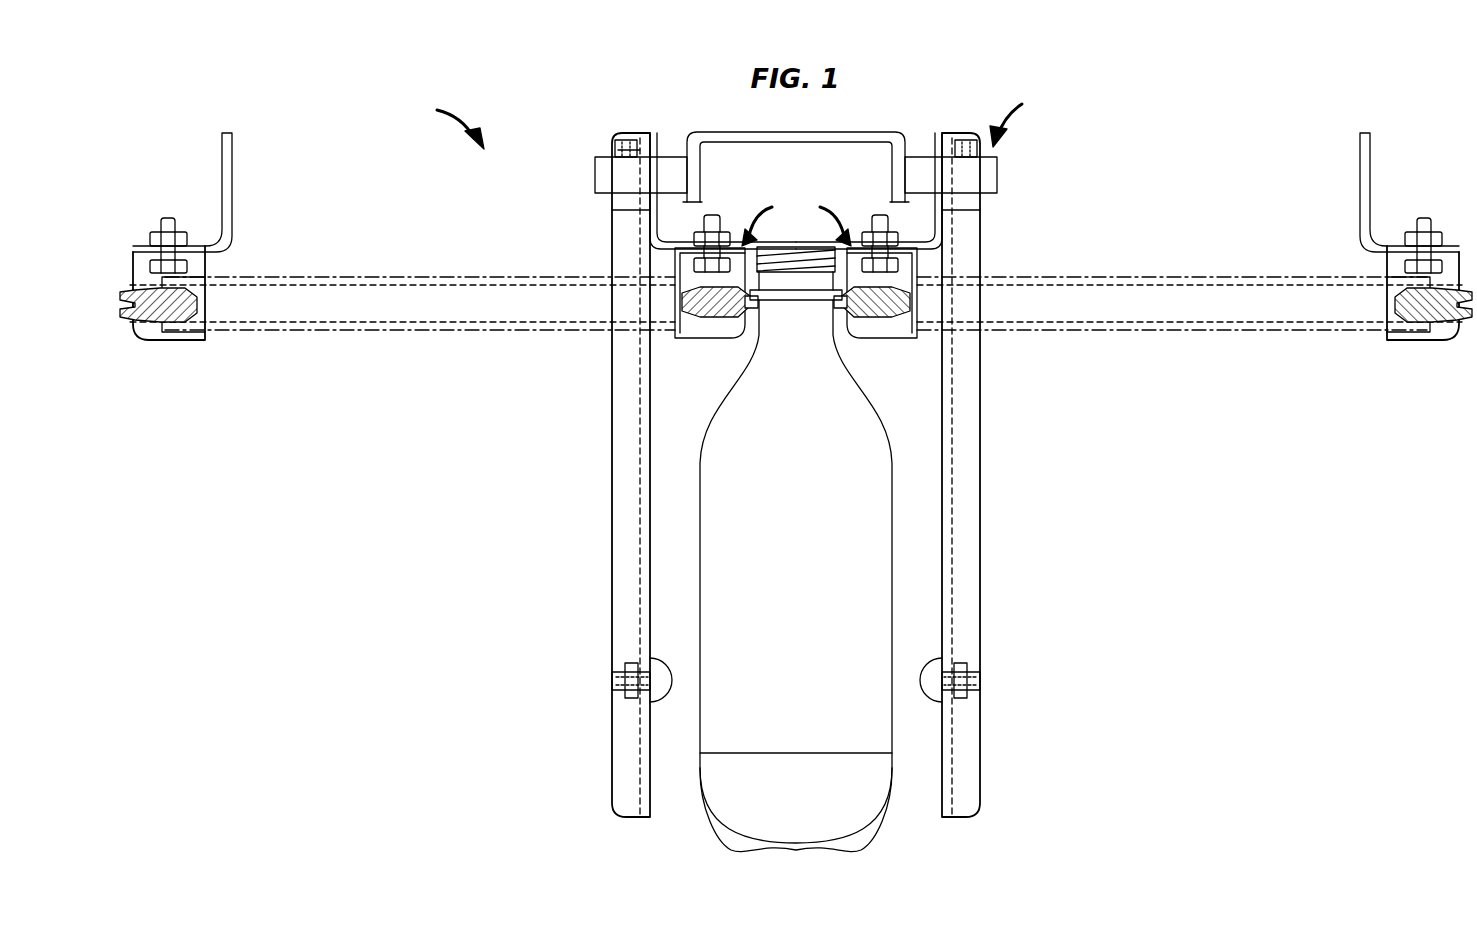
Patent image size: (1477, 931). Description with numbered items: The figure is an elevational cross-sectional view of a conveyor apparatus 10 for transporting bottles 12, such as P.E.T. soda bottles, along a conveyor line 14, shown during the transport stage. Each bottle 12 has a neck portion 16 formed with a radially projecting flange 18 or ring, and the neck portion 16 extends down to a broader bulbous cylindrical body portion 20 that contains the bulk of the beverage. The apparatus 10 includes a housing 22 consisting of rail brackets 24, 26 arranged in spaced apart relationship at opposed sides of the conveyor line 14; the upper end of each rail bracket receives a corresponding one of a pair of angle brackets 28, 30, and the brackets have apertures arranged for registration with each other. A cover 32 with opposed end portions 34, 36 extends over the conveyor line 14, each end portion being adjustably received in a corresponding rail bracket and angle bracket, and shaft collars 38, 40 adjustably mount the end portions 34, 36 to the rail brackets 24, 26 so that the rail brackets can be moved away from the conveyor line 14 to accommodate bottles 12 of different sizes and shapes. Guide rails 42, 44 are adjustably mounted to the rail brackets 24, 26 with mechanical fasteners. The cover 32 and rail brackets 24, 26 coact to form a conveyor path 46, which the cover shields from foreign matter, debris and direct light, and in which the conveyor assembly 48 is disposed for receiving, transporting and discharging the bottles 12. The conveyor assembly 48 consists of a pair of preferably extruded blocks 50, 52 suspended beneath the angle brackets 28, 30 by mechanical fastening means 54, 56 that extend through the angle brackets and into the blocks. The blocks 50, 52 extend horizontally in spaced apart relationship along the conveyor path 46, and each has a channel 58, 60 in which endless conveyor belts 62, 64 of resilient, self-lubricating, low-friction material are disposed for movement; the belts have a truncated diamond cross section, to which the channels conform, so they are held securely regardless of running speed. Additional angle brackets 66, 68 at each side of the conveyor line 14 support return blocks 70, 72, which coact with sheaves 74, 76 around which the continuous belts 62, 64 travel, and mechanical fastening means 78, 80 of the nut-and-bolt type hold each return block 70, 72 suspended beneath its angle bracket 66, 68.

The conveyor apparatus 10 is at (443, 121).
The bottle 12 is at (783, 610).
The conveyor line 14 is at (900, 578).
The neck portion 16 is at (742, 373).
The flange 18 is at (790, 303).
The body portion 20 is at (699, 532).
The housing 22 is at (1021, 120).
The rail bracket 24 is at (612, 412).
The rail bracket 26 is at (975, 405).
The angle bracket 28 is at (655, 133).
The angle bracket 30 is at (940, 133).
The cover 32 is at (715, 134).
The end portion 34 is at (598, 178).
The end portion 36 is at (998, 178).
The shaft collar 38 is at (618, 148).
The shaft collar 40 is at (966, 138).
The guide rail 42 is at (660, 690).
The guide rail 44 is at (930, 690).
The conveyor path 46 is at (785, 172).
The conveyor assembly 48 is at (785, 210).
The block 50 is at (678, 260).
The block 52 is at (912, 258).
The mechanical fastening means 54 is at (712, 213).
The mechanical fastening means 56 is at (880, 213).
The channel 58 is at (705, 302).
The channel 60 is at (885, 302).
The conveyor belt 62 is at (703, 320).
The conveyor belt 64 is at (887, 322).
The angle bracket 66 is at (232, 150).
The angle bracket 68 is at (1362, 162).
The return block 70 is at (170, 342).
The return block 72 is at (1405, 340).
The sheave 74 is at (338, 305).
The sheave 76 is at (1290, 305).
The mechanical fastening means 78 is at (168, 216).
The mechanical fastening means 80 is at (1423, 216).